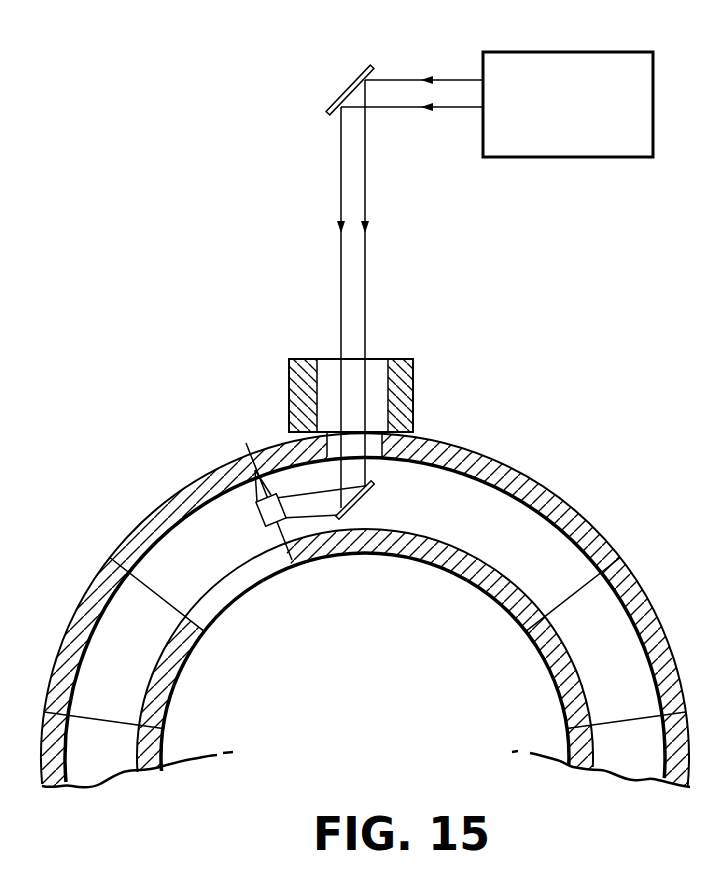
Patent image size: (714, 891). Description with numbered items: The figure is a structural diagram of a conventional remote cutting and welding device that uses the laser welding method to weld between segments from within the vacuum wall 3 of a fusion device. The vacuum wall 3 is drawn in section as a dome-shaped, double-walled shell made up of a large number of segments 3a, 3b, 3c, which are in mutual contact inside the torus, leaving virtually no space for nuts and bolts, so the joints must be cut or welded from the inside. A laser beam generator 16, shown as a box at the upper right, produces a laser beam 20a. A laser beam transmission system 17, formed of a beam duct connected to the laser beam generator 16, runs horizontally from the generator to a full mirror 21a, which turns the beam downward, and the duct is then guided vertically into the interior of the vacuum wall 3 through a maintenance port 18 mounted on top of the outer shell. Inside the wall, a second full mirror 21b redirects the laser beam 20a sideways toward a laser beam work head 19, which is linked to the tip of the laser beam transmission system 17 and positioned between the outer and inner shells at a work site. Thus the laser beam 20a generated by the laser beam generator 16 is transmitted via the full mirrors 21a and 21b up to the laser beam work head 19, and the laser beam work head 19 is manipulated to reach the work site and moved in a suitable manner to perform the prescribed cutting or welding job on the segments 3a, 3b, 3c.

The vacuum wall 3 is at (368, 658).
The segment 3a is at (237, 593).
The segment 3b is at (355, 554).
The segment 3c is at (475, 584).
The laser beam generator 16 is at (585, 158).
The laser beam transmission system 17 is at (330, 218).
The maintenance port 18 is at (413, 383).
The laser beam work head 19 is at (257, 520).
The laser beam 20a is at (405, 80).
The full mirror 21a is at (332, 96).
The full mirror 21b is at (374, 496).